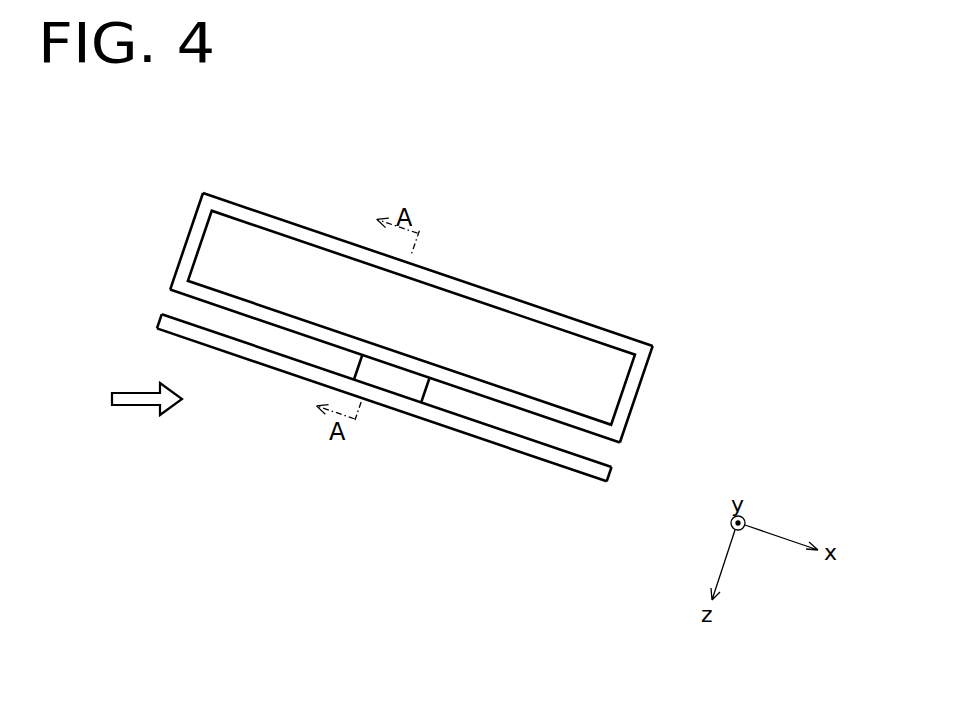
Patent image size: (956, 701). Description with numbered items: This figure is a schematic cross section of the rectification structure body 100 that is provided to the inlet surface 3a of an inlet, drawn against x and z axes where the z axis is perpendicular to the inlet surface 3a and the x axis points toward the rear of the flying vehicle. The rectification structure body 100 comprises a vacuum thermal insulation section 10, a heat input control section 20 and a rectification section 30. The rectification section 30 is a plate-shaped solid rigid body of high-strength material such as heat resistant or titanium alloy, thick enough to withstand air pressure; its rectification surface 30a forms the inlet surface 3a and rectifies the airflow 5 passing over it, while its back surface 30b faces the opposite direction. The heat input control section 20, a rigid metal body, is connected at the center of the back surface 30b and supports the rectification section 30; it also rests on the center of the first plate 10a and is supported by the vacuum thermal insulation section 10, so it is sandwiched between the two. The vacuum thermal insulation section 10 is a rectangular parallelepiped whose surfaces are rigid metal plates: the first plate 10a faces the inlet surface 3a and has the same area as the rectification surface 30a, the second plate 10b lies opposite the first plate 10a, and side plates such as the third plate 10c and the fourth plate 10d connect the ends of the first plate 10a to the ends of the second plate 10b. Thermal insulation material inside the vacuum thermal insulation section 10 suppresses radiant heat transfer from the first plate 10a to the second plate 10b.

The rectification structure body 100 is at (522, 207).
The vacuum thermal insulation section 10 is at (626, 349).
The first plate 10a is at (200, 299).
The second plate 10b is at (358, 243).
The third plate 10c is at (190, 250).
The fourth plate 10d is at (633, 393).
The heat input control section 20 is at (383, 380).
The rectification section 30 is at (538, 450).
The rectification surface 30a is at (593, 480).
The back surface 30b is at (603, 457).
The inlet surface 3a is at (167, 358).
The airflow 5 is at (140, 405).